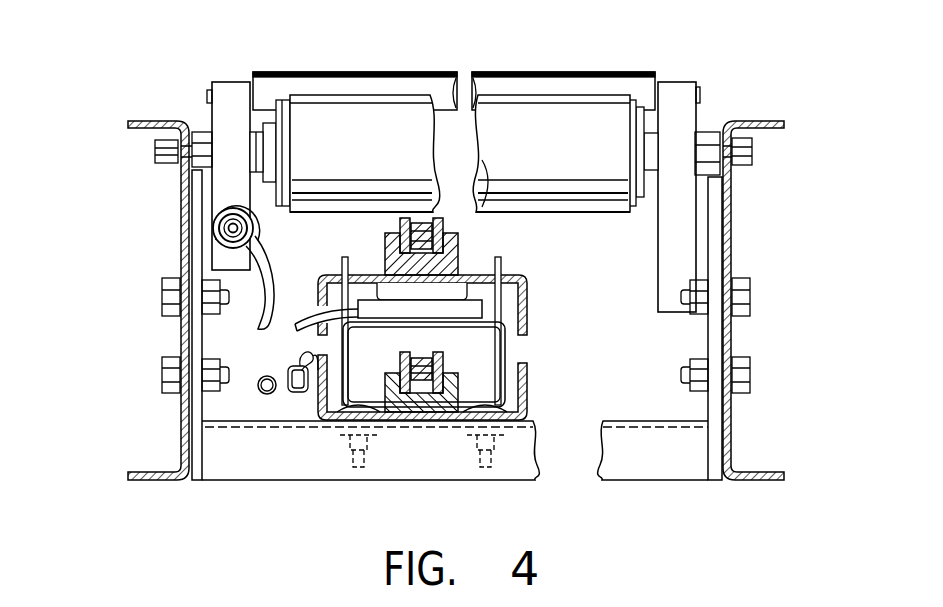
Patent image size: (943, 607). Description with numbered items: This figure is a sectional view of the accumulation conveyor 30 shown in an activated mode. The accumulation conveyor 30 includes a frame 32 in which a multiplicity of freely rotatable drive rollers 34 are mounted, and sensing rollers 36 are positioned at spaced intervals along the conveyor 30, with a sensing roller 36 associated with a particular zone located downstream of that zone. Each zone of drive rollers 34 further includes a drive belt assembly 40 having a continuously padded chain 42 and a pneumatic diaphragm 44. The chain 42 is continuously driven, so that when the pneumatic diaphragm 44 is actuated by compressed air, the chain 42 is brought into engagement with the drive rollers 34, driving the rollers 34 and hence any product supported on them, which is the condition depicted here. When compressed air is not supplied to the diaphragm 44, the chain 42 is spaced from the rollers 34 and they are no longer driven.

The accumulation conveyor 30 is at (697, 78).
The frame 32 is at (178, 250).
The drive rollers 34 is at (345, 98).
The sensing roller 36 is at (432, 72).
The drive belt assembly 40 is at (527, 398).
The continuously padded chain 42 is at (428, 210).
The pneumatic diaphragm 44 is at (527, 312).